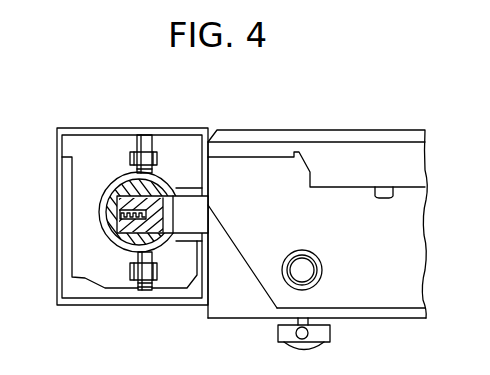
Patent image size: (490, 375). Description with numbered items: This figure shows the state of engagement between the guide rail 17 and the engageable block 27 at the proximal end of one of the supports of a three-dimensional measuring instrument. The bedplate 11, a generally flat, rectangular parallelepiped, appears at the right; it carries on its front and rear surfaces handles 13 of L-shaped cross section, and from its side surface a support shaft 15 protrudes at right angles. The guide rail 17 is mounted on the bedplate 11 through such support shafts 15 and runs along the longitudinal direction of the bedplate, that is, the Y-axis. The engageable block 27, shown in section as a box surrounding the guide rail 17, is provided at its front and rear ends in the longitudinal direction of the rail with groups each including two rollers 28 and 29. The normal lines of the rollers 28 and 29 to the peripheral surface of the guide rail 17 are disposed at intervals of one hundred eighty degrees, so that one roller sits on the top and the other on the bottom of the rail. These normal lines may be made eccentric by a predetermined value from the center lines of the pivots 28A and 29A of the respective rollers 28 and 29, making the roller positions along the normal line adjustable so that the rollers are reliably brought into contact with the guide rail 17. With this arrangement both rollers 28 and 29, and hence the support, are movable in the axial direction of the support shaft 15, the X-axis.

The bedplate 11 is at (341, 128).
The handle 13 is at (380, 303).
The support shaft 15 is at (203, 213).
The guide rail 17 is at (122, 247).
The engageable block 27 is at (76, 127).
The roller 28 is at (142, 134).
The pivot 28A is at (156, 158).
The roller 29 is at (140, 284).
The pivot 29A is at (156, 274).